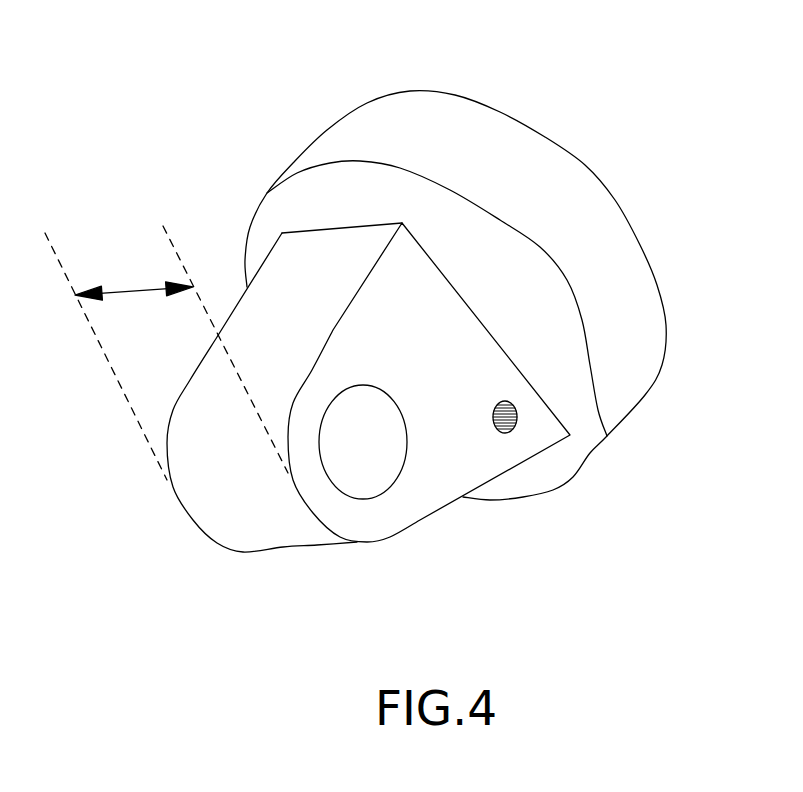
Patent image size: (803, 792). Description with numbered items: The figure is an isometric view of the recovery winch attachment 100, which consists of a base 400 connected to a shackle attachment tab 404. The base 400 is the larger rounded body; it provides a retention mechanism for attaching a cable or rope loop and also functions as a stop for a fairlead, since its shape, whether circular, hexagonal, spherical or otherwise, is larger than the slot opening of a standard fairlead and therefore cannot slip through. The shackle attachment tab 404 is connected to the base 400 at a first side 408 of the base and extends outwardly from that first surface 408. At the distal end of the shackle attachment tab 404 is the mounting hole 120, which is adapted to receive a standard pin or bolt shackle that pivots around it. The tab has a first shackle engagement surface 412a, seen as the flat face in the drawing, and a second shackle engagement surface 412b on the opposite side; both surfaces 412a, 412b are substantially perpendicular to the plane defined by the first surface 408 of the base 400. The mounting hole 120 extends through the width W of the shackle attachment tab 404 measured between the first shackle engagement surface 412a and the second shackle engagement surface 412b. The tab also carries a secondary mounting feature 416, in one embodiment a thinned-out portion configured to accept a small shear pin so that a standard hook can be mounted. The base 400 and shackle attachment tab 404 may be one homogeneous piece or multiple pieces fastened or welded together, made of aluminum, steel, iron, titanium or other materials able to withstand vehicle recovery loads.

The recovery winch attachment 100 is at (158, 66).
The base 400 is at (642, 267).
The shackle attachment tab 404 is at (253, 533).
The first side of the base 408 is at (575, 387).
The first shackle engagement surface 412a is at (438, 324).
The second shackle engagement surface 412b is at (232, 275).
The secondary mounting feature 416 is at (518, 430).
The mounting hole 120 is at (390, 493).
The width of the shackle attachment tab W is at (134, 282).